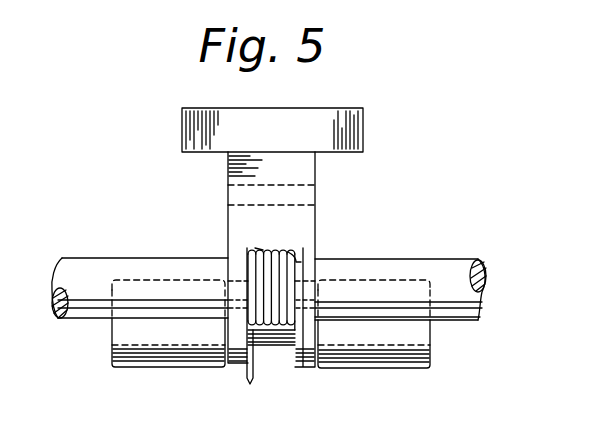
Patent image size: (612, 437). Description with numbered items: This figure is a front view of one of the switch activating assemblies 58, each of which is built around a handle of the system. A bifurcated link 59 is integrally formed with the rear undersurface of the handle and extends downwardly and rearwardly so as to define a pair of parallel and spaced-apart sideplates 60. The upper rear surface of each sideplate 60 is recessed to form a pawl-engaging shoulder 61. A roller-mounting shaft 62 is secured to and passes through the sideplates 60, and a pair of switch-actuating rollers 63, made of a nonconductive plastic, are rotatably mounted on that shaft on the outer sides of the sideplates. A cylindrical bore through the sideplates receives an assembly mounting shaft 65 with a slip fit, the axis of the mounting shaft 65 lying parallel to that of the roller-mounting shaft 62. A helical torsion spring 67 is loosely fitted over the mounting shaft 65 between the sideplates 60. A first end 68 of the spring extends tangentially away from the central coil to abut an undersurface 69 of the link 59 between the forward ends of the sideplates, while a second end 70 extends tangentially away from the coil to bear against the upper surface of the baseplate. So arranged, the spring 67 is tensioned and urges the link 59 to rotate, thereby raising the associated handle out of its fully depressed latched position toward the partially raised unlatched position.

The switch activating assembly 58 is at (158, 191).
The bifurcated link 59 is at (300, 183).
The sideplates 60 is at (237, 353).
The pawl-engaging shoulder 61 is at (228, 197).
The roller-mounting shaft 62 is at (270, 350).
The switch-actuating rollers 63 is at (140, 355).
The assembly mounting shaft 65 is at (98, 258).
The helical torsion spring 67 is at (260, 270).
The first end of spring 68 is at (297, 262).
The undersurface of link 69 is at (263, 248).
The second end of spring 70 is at (250, 378).